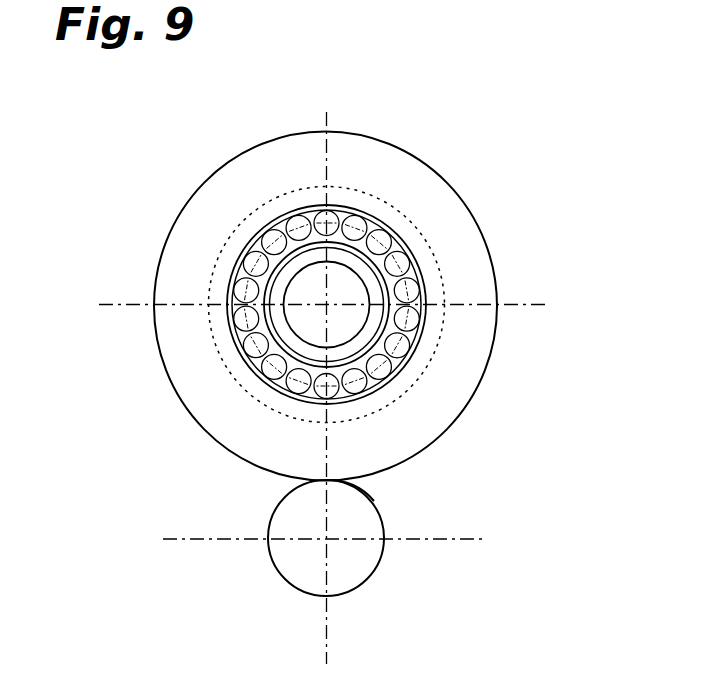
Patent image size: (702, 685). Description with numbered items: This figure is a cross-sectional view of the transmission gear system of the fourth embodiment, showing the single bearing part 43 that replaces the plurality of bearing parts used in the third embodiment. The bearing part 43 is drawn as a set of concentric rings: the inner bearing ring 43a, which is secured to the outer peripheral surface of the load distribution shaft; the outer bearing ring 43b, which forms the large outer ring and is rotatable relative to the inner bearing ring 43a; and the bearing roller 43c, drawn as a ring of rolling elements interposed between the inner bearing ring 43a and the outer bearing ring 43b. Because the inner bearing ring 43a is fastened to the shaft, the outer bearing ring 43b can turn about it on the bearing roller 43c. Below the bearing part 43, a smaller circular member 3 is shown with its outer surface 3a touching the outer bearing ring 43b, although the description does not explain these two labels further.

The bearing part 43 is at (329, 287).
The inner bearing ring 43a is at (400, 326).
The outer bearing ring 43b is at (197, 187).
The bearing roller 43c is at (406, 257).
The shaft 3 is at (378, 541).
The outer peripheral surface of shaft 3a is at (374, 502).